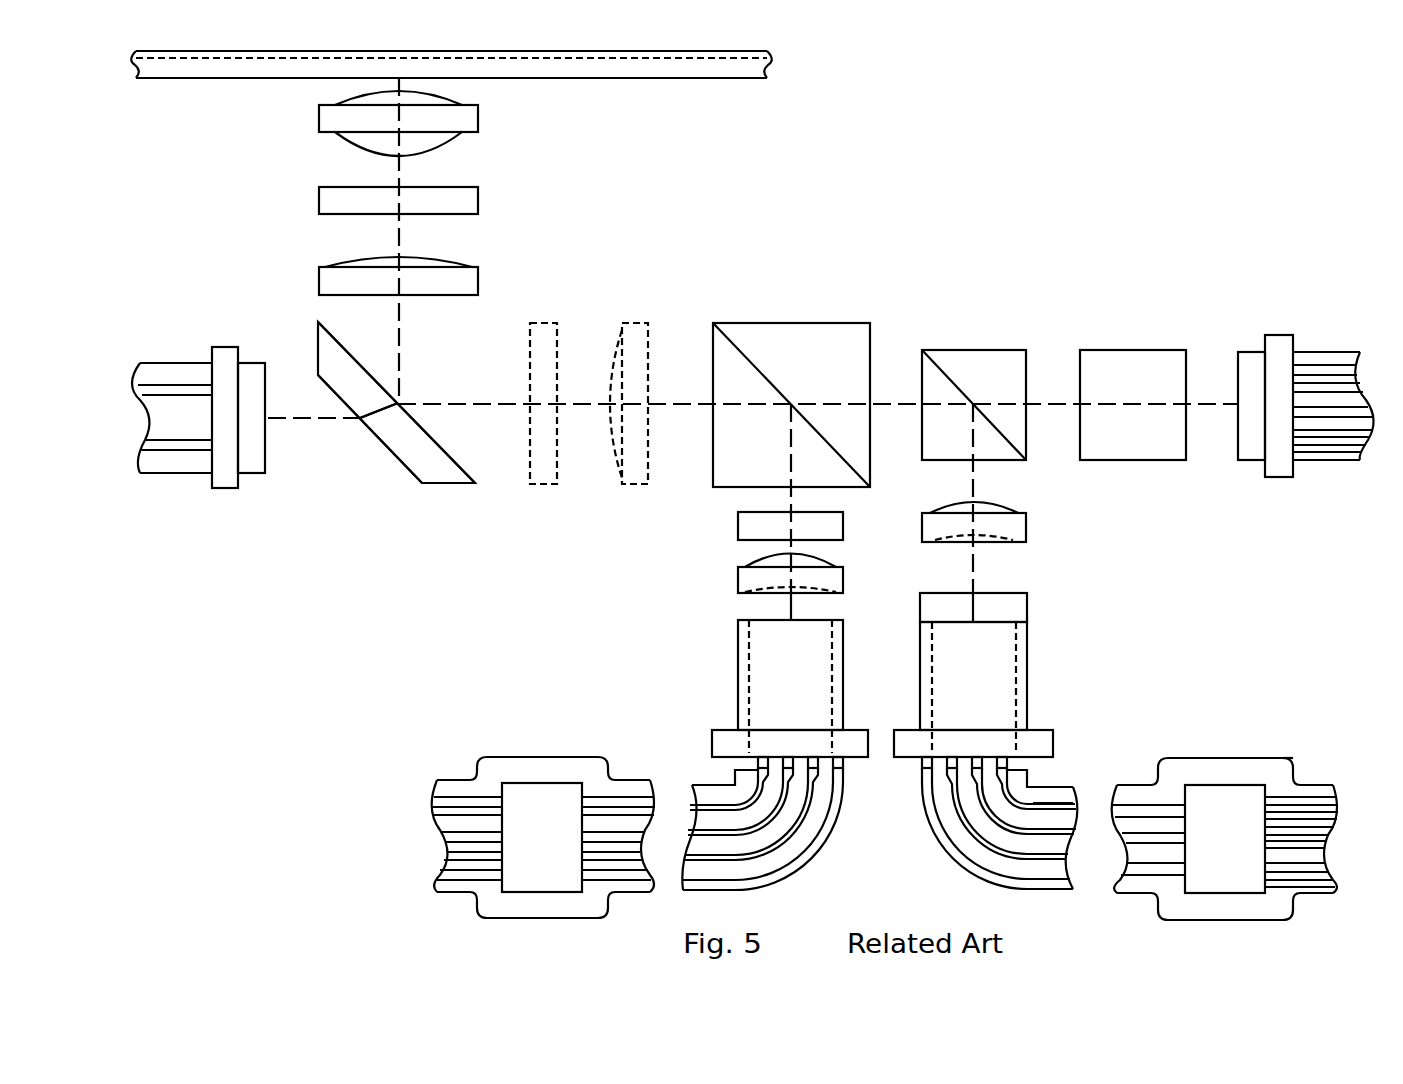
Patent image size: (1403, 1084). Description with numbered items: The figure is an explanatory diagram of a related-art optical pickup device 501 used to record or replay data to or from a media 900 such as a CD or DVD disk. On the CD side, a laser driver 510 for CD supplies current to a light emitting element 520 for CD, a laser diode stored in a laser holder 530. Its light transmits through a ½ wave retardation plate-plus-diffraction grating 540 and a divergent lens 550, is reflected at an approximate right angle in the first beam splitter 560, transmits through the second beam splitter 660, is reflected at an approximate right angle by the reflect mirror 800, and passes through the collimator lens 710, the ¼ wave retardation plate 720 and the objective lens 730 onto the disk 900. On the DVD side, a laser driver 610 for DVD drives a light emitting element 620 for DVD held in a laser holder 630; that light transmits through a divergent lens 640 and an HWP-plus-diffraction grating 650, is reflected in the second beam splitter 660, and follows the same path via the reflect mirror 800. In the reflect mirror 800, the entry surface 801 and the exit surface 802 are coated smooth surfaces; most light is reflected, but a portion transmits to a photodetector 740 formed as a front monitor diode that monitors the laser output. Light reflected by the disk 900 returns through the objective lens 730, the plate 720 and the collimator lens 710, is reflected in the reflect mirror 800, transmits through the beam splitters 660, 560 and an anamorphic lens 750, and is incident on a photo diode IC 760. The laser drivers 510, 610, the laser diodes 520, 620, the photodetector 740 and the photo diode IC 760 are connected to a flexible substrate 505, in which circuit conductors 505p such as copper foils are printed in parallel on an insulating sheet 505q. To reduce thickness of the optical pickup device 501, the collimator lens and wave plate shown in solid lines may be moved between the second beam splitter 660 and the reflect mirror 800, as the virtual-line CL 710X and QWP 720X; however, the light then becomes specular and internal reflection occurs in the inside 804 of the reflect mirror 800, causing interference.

The media 900 is at (722, 85).
The objective lens 730 is at (482, 118).
The 1/4 wave retardation plate 720 is at (482, 202).
The collimator lens 710 is at (482, 282).
The QWP 720X is at (547, 317).
The CL 710X is at (637, 317).
The photodetector 740 is at (223, 343).
The photo diode IC 760 is at (1280, 332).
The anamorphic lens 750 is at (1133, 348).
The second beam splitter 660 is at (845, 322).
The first beam splitter 560 is at (975, 348).
The HWP-plus-diffraction grating 650 is at (733, 527).
The divergent lens 640 is at (733, 580).
The laser holder 630 is at (738, 643).
The light emitting element for DVD 620 is at (749, 680).
The divergent lens 550 is at (1033, 528).
The 1/2 wave retardation plate-plus-diffraction grating 540 is at (1032, 608).
The laser holder 530 is at (1027, 643).
The light emitting element for CD 520 is at (1016, 680).
The reflect mirror 800 is at (377, 440).
The surface 801 is at (467, 472).
The surface 802 is at (402, 468).
The inside 804 is at (437, 467).
The flexible substrate 505 is at (181, 478).
The circuit conductors 505p is at (1133, 805).
The insulating sheet 505q is at (1277, 772).
The laser driver for DVD 610 is at (540, 781).
The laser driver for CD 510 is at (1225, 782).
The optical pickup device 501 is at (342, 675).